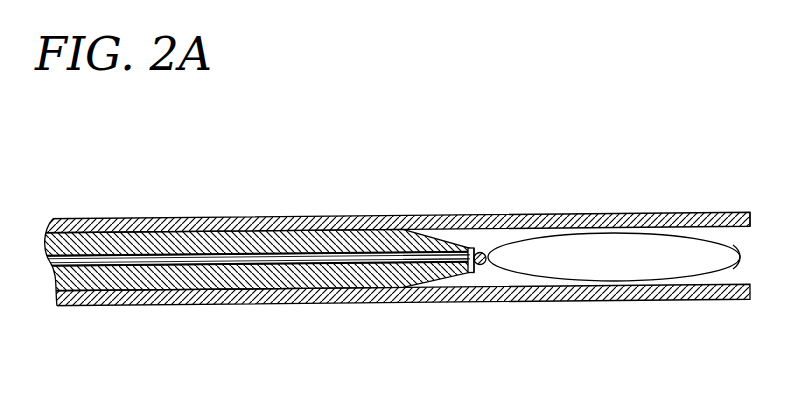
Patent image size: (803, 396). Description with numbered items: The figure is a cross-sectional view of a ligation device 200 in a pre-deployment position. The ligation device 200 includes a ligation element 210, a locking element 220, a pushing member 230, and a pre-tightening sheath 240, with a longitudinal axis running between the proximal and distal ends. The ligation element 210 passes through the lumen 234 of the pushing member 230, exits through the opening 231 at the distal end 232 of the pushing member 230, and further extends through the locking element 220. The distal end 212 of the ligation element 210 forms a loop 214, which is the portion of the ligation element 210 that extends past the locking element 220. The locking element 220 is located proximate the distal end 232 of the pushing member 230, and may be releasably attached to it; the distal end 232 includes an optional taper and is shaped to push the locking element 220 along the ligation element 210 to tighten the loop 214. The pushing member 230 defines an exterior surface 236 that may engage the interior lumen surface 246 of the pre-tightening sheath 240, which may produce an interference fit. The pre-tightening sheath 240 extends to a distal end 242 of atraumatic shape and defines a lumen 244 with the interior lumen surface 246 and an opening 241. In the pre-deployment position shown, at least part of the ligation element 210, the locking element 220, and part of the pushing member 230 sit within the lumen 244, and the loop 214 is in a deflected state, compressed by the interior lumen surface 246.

The ligation device 200 is at (156, 159).
The ligation element 210 is at (505, 268).
The distal end 212 is at (742, 253).
The loop 214 is at (547, 235).
The locking element 220 is at (478, 253).
The pushing member 230 is at (348, 238).
The opening 231 is at (470, 248).
The distal end 232 is at (468, 247).
The lumen 234 is at (277, 257).
The exterior surface 236 is at (240, 290).
The pre-tightening sheath 240 is at (207, 227).
The opening 241 is at (742, 243).
The distal end 242 is at (747, 213).
The lumen 244 is at (508, 280).
The interior lumen surface 246 is at (370, 287).